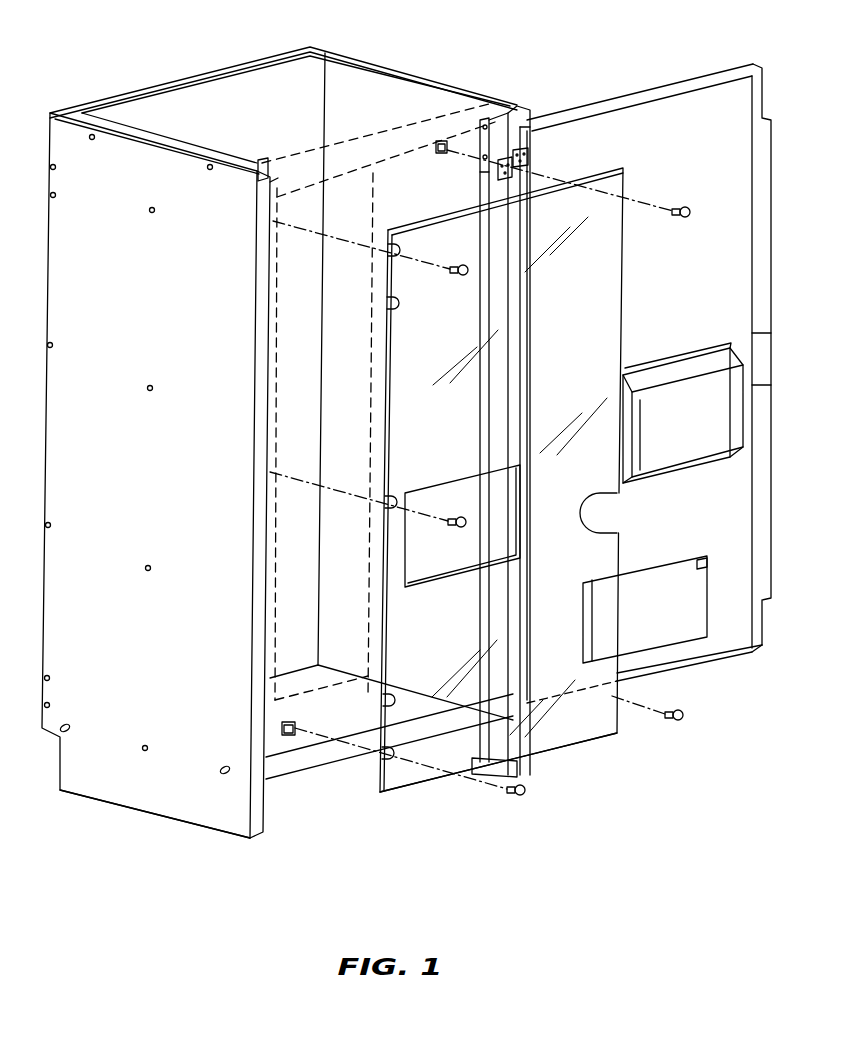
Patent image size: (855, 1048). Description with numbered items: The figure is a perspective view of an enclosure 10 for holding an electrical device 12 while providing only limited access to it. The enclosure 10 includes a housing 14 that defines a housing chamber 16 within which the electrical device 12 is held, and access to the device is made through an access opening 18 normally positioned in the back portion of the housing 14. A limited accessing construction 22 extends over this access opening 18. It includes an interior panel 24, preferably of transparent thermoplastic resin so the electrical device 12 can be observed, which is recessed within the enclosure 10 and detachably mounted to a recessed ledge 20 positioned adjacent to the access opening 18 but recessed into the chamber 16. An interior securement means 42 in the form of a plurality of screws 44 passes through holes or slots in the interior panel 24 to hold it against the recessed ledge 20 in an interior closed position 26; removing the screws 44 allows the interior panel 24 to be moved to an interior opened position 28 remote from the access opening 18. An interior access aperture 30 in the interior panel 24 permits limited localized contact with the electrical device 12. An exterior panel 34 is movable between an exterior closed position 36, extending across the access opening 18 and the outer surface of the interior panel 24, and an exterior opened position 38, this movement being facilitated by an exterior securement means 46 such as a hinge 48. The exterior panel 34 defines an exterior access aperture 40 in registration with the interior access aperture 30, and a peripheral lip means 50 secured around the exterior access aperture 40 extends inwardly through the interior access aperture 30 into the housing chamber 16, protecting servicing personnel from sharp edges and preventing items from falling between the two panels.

The enclosure 10 is at (134, 296).
The electrical device 12 is at (287, 345).
The housing 14 is at (107, 800).
The housing chamber 16 is at (284, 125).
The access opening 18 is at (435, 149).
The recessed ledge 20 is at (277, 167).
The limited accessing construction 22 is at (588, 178).
The interior panel 24 is at (424, 633).
The interior closed position 26 is at (414, 124).
The interior opened position 28 is at (420, 782).
The interior access aperture 30 is at (458, 486).
The exterior panel 34 is at (720, 74).
The exterior closed position 36 is at (457, 112).
The exterior opened position 38 is at (655, 93).
The exterior access aperture 40 is at (674, 445).
The interior securement means 42 is at (683, 220).
The screws 44 is at (457, 276).
The exterior securement means 46 is at (748, 651).
The hinge 48 is at (505, 158).
The peripheral lip means 50 is at (737, 420).